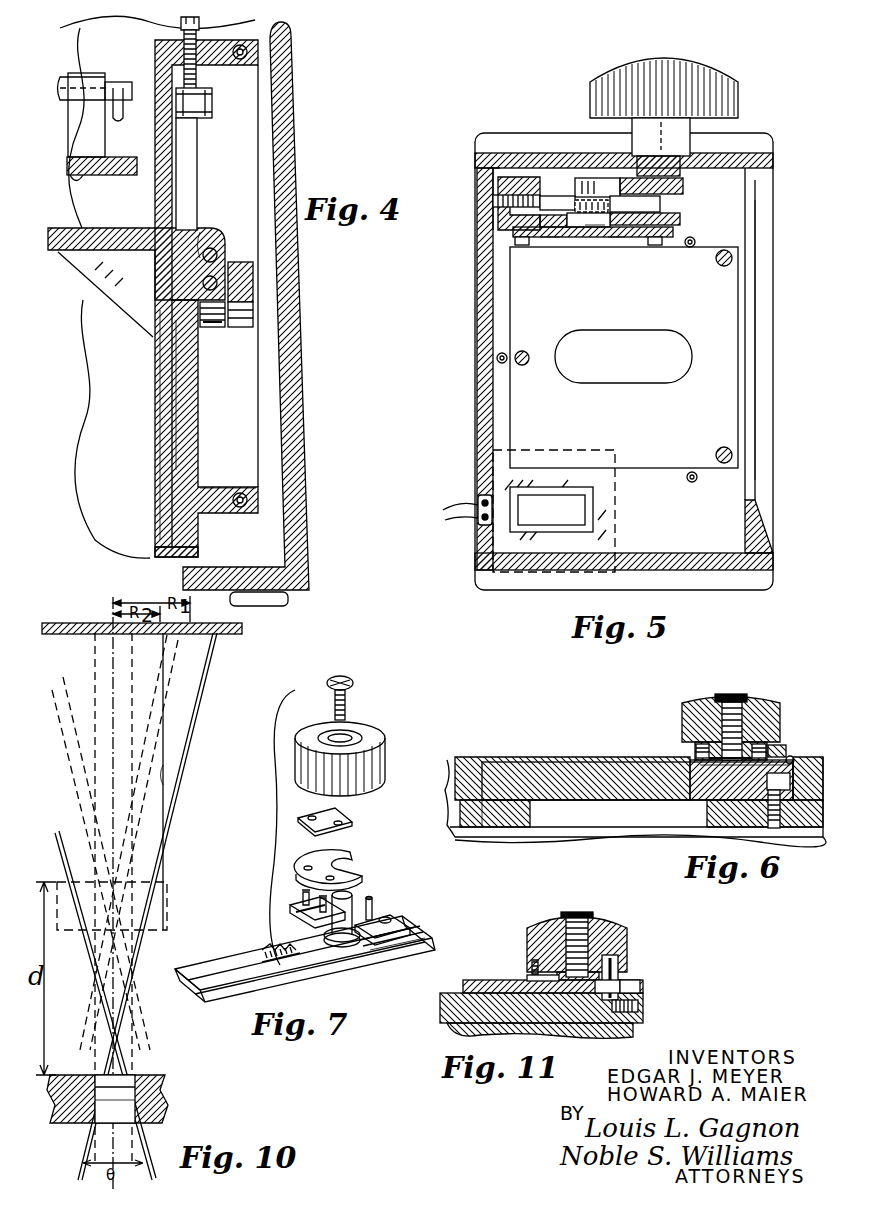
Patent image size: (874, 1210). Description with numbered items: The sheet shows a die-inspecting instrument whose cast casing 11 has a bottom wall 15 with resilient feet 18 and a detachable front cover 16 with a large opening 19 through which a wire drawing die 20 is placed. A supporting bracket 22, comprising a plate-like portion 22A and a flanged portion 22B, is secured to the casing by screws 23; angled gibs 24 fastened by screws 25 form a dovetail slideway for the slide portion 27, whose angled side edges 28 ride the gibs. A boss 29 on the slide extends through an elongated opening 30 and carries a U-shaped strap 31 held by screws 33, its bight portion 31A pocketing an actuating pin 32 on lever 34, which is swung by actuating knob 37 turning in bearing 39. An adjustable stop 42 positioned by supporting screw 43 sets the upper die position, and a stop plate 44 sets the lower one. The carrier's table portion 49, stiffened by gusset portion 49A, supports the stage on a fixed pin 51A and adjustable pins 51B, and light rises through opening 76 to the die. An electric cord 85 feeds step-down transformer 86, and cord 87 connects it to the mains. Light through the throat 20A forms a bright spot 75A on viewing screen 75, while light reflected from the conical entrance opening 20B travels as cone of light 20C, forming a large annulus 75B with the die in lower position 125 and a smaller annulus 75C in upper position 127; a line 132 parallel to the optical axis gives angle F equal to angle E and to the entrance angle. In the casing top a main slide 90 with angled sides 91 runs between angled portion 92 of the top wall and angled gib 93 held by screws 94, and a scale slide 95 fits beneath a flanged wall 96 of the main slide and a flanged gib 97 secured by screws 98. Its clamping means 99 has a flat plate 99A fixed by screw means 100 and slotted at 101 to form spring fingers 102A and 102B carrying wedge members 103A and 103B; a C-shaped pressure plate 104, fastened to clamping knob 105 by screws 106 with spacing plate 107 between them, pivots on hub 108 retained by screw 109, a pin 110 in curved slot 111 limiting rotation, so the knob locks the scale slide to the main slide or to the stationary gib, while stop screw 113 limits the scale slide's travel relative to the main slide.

In FIG. 5, the casing 11 is at (464, 244).
In FIG. 4, the bottom wall 15 is at (237, 567).
In FIG. 5, the detachable front wall 16 is at (775, 553).
In FIG. 4, the resilient feet 18 is at (289, 600).
In FIG. 5, the opening 19 is at (755, 395).
In FIG. 10, the wire drawing die 20 is at (162, 1120).
In FIG. 10, the central opening 20A is at (118, 1078).
In FIG. 10, the entrance opening 20B is at (100, 1112).
In FIG. 10, the cone of light 20C is at (70, 840).
In FIG. 4, the supporting bracket 22 is at (240, 160).
In FIG. 5, the supporting bracket 22 is at (558, 190).
In FIG. 4, the plate-like portion 22A is at (183, 463).
In FIG. 5, the plate-like portion 22A is at (648, 203).
In FIG. 4, the flanged portion 22B is at (218, 513).
In FIG. 5, the flanged portion 22B is at (514, 185).
In FIG. 4, the screws 23 is at (247, 50).
In FIG. 5, the screws 23 is at (495, 198).
In FIG. 5, the angled gibs 24 is at (515, 232).
In FIG. 5, the screws 25 is at (512, 228).
In FIG. 4, the slide portion 27 is at (158, 428).
In FIG. 5, the slide portion 27 is at (558, 238).
In FIG. 5, the angled side edges 28 is at (545, 235).
In FIG. 4, the boss 29 is at (195, 250).
In FIG. 5, the boss 29 is at (590, 225).
In FIG. 4, the vertically elongated opening 30 is at (197, 212).
In FIG. 5, the vertically elongated opening 30 is at (612, 236).
In FIG. 5, the U-shaped strap 31 is at (560, 178).
In FIG. 4, the bight portion 31A is at (222, 330).
In FIG. 4, the actuating pin 32 is at (210, 330).
In FIG. 4, the screws 33 is at (219, 259).
In FIG. 5, the screws 33 is at (610, 204).
In FIG. 4, the actuating lever 34 is at (254, 322).
In FIG. 5, the actuating lever 34 is at (603, 185).
In FIG. 5, the actuating knob 37 is at (738, 95).
In FIG. 5, the bearing 39 is at (690, 140).
In FIG. 4, the adjustable stop 42 is at (212, 104).
In FIG. 4, the supporting screw 43 is at (199, 26).
In FIG. 4, the stop plate 44 is at (155, 550).
In FIG. 4, the table portion 49 is at (95, 242).
In FIG. 5, the table portion 49 is at (730, 295).
In FIG. 4, the gusset portion 49A is at (60, 262).
In FIG. 5, the fixed pin 51A is at (528, 353).
In FIG. 5, the adjustable pins 51B is at (722, 268).
In FIG. 10, the viewing screen 75 is at (74, 617).
In FIG. 10, the bright spot 75A is at (85, 634).
In FIG. 10, the light annulus 75B is at (217, 640).
In FIG. 10, the smaller light annulus 75C is at (163, 637).
In FIG. 5, the opening 76 is at (595, 380).
In FIG. 5, the electric cord 85 is at (500, 495).
In FIG. 5, the step down transformer 86 is at (551, 509).
In FIG. 5, the electric cord 87 is at (455, 505).
In FIG. 6, the main slide 90 is at (540, 772).
In FIG. 11, the main slide 90 is at (545, 1018).
In FIG. 6, the angled sides 91 is at (505, 768).
In FIG. 6, the angled portion 92 is at (470, 770).
In FIG. 6, the angled gib 93 is at (792, 780).
In FIG. 6, the screws 94 is at (778, 828).
In FIG. 7, the scale slide 95 is at (292, 958).
In FIG. 6, the scale slide 95 is at (662, 810).
In FIG. 11, the scale slide 95 is at (480, 984).
In FIG. 6, the flanged wall 96 is at (703, 767).
In FIG. 6, the flanged gib 97 is at (770, 745).
In FIG. 6, the screws 98 is at (793, 756).
In FIG. 7, the clamping means 99 is at (270, 827).
In FIG. 6, the clamping means 99 is at (693, 777).
In FIG. 11, the clamping means 99 is at (632, 988).
In FIG. 7, the flat plate 99A is at (392, 920).
In FIG. 7, the screw means 100 is at (358, 928).
In FIG. 11, the screw means 100 is at (625, 985).
In FIG. 7, the parallel slots 101 is at (358, 916).
In FIG. 7, the spring finger 102A is at (385, 955).
In FIG. 7, the spring finger 102B is at (292, 913).
In FIG. 7, the wedge member 103A is at (358, 942).
In FIG. 6, the wedge member 103A is at (698, 742).
In FIG. 7, the wedge member 103B is at (298, 910).
In FIG. 6, the wedge member 103B is at (760, 748).
In FIG. 7, the C-shaped pressure plate 104 is at (342, 866).
In FIG. 11, the C-shaped pressure plate 104 is at (530, 977).
In FIG. 7, the clamping knob 105 is at (372, 738).
In FIG. 6, the clamping knob 105 is at (772, 705).
In FIG. 11, the clamping knob 105 is at (615, 932).
In FIG. 7, the screws 106 is at (303, 895).
In FIG. 7, the spacing plate 107 is at (338, 828).
In FIG. 11, the spacing plate 107 is at (533, 966).
In FIG. 7, the hub 108 is at (308, 944).
In FIG. 6, the hub 108 is at (740, 745).
In FIG. 7, the screw 109 is at (352, 684).
In FIG. 6, the screw 109 is at (745, 697).
In FIG. 11, the screw 109 is at (586, 916).
In FIG. 7, the pin 110 is at (372, 910).
In FIG. 11, the pin 110 is at (614, 975).
In FIG. 11, the curved slot 111 is at (618, 958).
In FIG. 11, the stop screw 113 is at (640, 1004).
In FIG. 10, the lower operative position 125 is at (165, 1075).
In FIG. 10, the upper operative position 127 is at (165, 880).
In FIG. 10, the line 132 is at (163, 714).
In FIG. 10, the angle E is at (120, 962).
In FIG. 10, the angle F is at (165, 772).